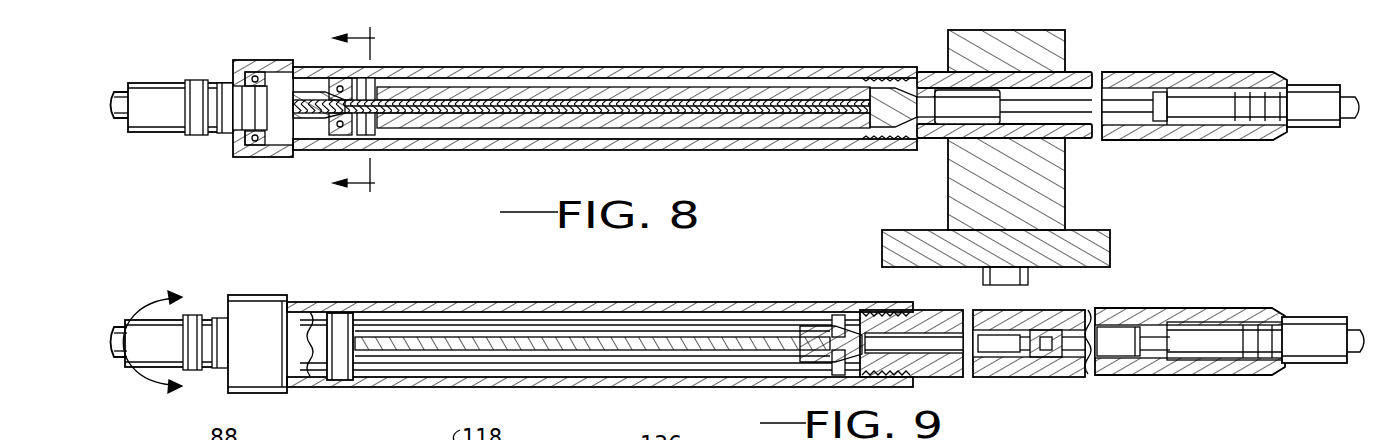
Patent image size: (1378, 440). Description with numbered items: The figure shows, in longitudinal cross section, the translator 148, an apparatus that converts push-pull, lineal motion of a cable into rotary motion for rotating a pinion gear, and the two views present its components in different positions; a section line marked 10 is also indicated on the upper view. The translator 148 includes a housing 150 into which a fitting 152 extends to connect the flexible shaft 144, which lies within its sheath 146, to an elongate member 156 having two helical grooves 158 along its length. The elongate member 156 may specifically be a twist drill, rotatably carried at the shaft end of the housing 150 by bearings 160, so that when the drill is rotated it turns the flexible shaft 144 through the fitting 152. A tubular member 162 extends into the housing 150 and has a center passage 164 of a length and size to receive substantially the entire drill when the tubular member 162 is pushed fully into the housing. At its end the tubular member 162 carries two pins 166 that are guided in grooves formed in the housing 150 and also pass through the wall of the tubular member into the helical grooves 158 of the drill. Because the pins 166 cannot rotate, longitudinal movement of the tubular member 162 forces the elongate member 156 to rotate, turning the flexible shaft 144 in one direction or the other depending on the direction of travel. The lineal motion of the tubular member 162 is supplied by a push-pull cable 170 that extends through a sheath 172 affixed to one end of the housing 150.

In FIG. 8, the section line 10- 10 is at (341, 109).
In FIG. 8, the flexible shaft 144 is at (127, 120).
In FIG. 9, the flexible shaft 144 is at (121, 330).
In FIG. 8, the sheath 146 is at (160, 83).
In FIG. 9, the sheath 146 is at (176, 320).
In FIG. 8, the translator 148 is at (604, 113).
In FIG. 9, the translator 148 is at (641, 327).
In FIG. 8, the housing 150 is at (493, 150).
In FIG. 9, the housing 150 is at (512, 303).
In FIG. 8, the fitting 152 is at (300, 92).
In FIG. 9, the fitting 152 is at (306, 330).
In FIG. 8, the elongate member 156 is at (616, 117).
In FIG. 9, the elongate member 156 is at (597, 338).
In FIG. 9, the helical grooves 158 is at (690, 340).
In FIG. 8, the bearings 160 is at (348, 137).
In FIG. 9, the bearings 160 is at (345, 312).
In FIG. 8, the tubular member 162 is at (551, 87).
In FIG. 9, the tubular member 162 is at (898, 284).
In FIG. 8, the center passage 164 is at (595, 100).
In FIG. 9, the center passage 164 is at (925, 340).
In FIG. 8, the pins 166 is at (378, 85).
In FIG. 9, the pins 166 is at (808, 312).
In FIG. 8, the push-pull cable 170 is at (1353, 97).
In FIG. 9, the push-pull cable 170 is at (1356, 330).
In FIG. 8, the sheath 172 is at (1308, 128).
In FIG. 9, the sheath 172 is at (1303, 361).